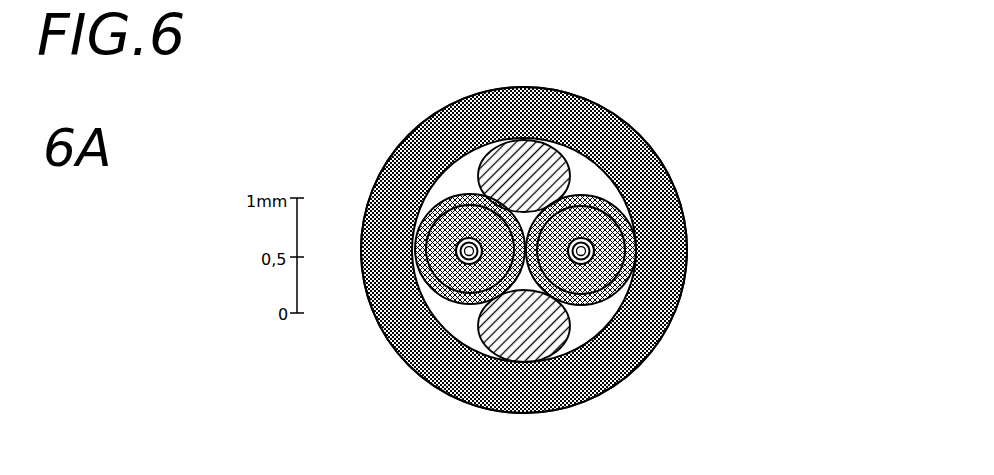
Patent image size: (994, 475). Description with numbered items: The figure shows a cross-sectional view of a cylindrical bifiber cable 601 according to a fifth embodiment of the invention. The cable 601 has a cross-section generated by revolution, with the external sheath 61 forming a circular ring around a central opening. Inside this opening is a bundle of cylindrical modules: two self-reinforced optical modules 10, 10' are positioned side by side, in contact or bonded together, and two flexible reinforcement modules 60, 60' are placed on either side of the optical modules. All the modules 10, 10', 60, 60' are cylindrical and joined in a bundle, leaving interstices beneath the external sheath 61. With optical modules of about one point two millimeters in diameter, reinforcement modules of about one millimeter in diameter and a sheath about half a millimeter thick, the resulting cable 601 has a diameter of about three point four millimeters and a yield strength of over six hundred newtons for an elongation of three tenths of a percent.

The self-reinforced optical module 10 is at (454, 180).
The self-reinforced optical module 10' is at (603, 186).
The flexible reinforcement module 60 is at (524, 122).
The flexible reinforcement module 60' is at (524, 382).
The external sheath 61 is at (403, 176).
The cable 601 is at (748, 147).